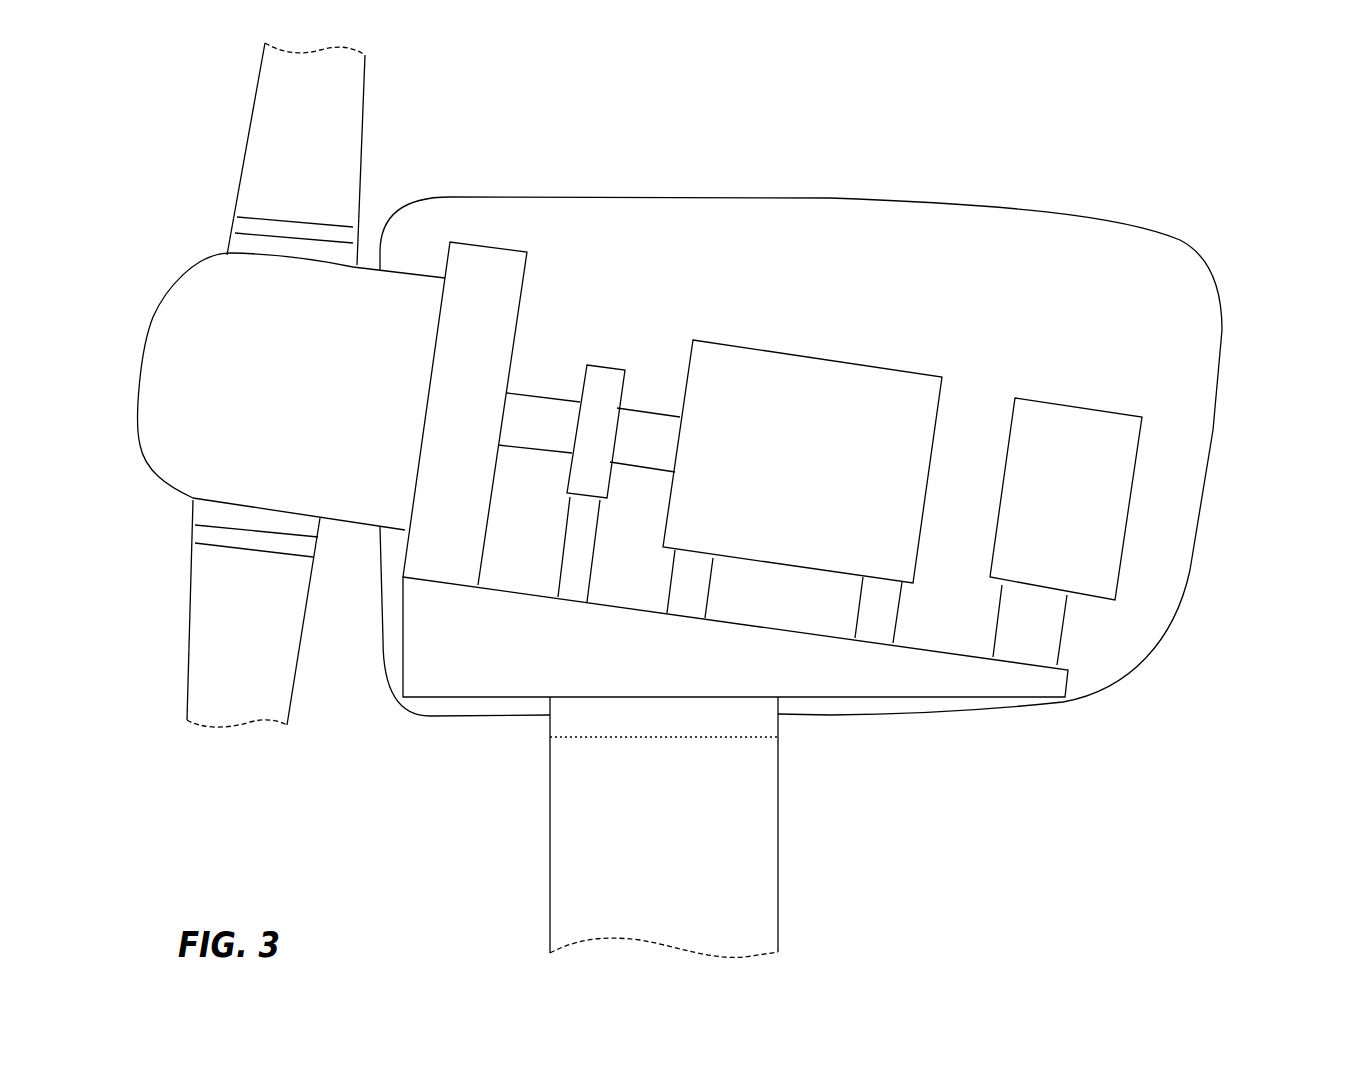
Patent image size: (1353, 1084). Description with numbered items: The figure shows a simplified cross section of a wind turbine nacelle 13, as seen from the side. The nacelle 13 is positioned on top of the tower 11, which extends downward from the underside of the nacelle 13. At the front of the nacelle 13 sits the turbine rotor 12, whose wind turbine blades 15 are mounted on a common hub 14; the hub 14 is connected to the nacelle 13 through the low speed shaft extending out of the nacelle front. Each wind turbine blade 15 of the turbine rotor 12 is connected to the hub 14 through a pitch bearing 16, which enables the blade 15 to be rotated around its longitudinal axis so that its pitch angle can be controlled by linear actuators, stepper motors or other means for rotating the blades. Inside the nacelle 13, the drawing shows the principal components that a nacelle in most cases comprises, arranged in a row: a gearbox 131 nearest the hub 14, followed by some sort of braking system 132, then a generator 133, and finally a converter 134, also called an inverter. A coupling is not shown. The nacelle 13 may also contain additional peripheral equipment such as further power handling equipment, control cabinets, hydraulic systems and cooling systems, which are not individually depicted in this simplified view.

The tower 11 is at (747, 908).
The turbine rotor 12 is at (143, 524).
The wind turbine nacelle 13 is at (1266, 226).
The hub 14 is at (243, 356).
The wind turbine blade 15 is at (322, 147).
The pitch bearing 16 is at (227, 538).
The gearbox 131 is at (485, 278).
The braking system 132 is at (605, 388).
The generator 133 is at (767, 402).
The converter 134 is at (1090, 455).